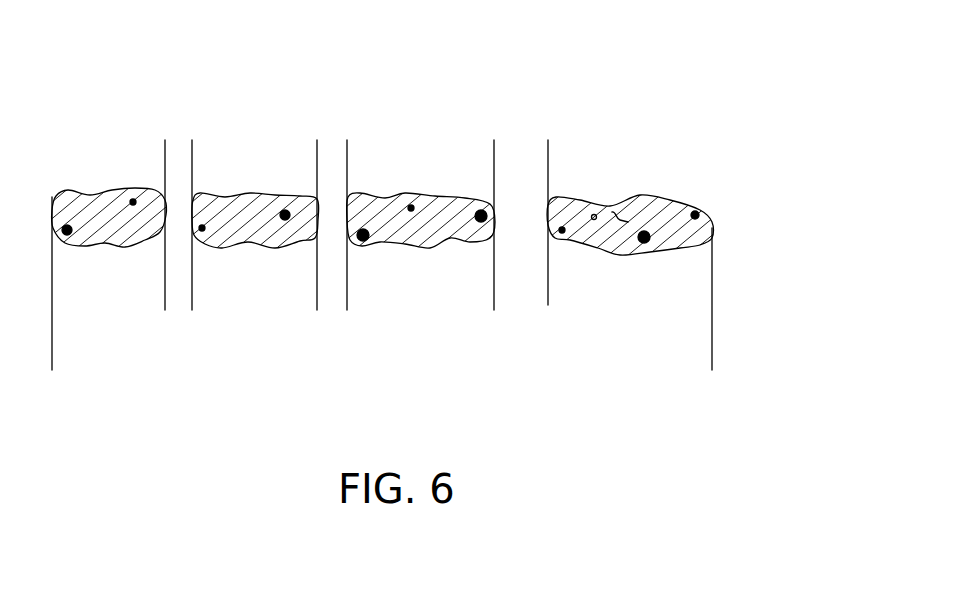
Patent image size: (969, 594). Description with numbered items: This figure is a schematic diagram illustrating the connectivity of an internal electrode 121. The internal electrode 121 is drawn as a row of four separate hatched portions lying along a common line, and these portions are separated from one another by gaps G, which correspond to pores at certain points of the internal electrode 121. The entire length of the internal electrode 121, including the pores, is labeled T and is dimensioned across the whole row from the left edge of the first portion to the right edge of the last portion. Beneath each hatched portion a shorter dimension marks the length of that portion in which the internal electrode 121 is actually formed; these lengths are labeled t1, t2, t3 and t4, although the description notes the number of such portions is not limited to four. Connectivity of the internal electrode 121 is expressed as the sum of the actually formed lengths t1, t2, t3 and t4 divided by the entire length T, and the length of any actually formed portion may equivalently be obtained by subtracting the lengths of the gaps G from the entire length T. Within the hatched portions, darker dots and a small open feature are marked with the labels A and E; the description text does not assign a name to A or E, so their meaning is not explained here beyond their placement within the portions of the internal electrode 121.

The internal electrode 121 is at (712, 222).
The electrolyte / void E is at (624, 211).
The active material particle A is at (696, 212).
The gap G is at (595, 152).
The length of first actually formed portion t1 is at (165, 292).
The length of second actually formed portion t2 is at (317, 292).
The length of third actually formed portion t3 is at (494, 292).
The length of fourth actually formed portion t4 is at (712, 292).
The entire length of internal electrode T is at (712, 347).